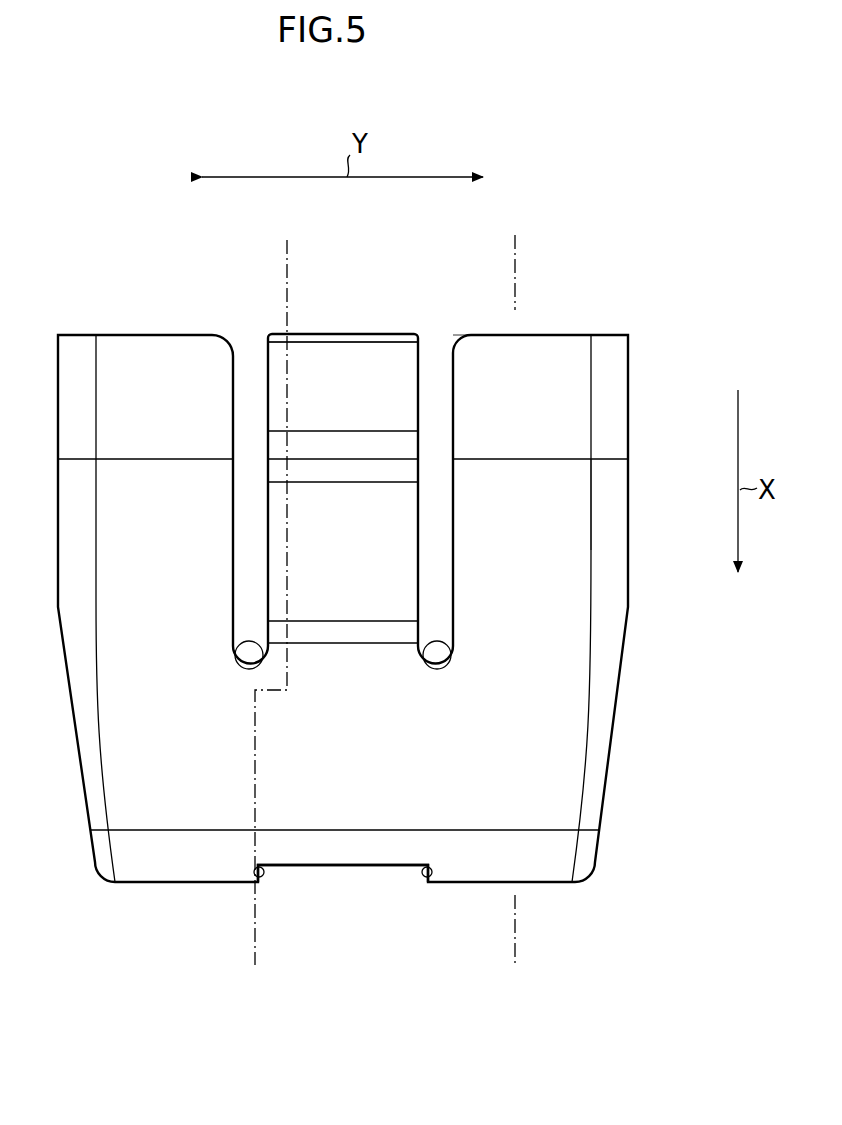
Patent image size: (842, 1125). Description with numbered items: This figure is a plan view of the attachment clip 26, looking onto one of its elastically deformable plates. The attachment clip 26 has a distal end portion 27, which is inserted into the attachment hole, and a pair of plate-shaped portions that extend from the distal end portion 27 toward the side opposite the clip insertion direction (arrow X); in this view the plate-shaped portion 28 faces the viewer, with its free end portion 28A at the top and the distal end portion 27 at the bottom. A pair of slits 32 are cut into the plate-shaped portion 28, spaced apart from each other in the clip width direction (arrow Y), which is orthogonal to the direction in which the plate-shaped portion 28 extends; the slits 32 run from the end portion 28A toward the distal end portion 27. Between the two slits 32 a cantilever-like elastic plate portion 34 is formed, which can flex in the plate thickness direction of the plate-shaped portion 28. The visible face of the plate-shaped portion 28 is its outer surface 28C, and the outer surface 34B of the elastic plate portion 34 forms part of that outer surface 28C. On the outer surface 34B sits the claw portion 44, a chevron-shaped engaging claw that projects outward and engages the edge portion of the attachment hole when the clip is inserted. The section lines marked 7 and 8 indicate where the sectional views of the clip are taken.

The attachment clip 26 is at (643, 328).
The distal end portion 27 is at (455, 883).
The plate-shaped portion 28 is at (622, 667).
The end portion 28A is at (553, 335).
The outer surface 28C is at (525, 625).
The slits 32 is at (238, 651).
The elastic plate portion 34 is at (394, 330).
The outer surface 34B is at (340, 372).
The claw portion 44 is at (357, 535).
The section line FIG. 7 is at (288, 250).
The section line FIG. 8 is at (516, 250).